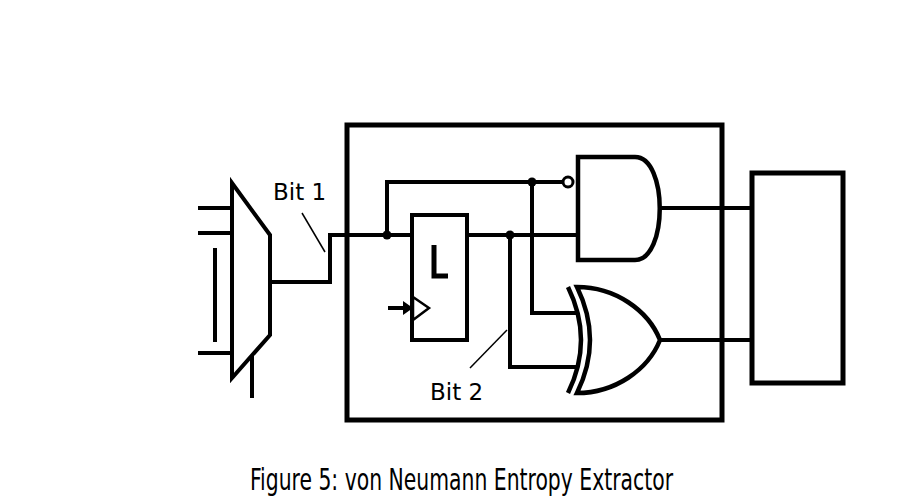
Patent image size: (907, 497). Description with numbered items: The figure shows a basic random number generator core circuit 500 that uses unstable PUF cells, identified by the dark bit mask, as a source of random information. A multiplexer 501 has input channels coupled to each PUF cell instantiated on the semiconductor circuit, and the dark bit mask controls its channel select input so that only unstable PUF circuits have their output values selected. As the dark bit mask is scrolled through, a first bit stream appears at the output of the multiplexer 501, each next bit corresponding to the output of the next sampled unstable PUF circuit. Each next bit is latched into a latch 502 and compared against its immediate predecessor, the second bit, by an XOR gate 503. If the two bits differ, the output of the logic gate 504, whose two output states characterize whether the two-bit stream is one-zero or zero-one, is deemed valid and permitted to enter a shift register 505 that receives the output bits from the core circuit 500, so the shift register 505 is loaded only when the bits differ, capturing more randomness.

The random number generator core circuit 500 is at (382, 127).
The multiplexer 501 is at (248, 223).
The latch 502 is at (437, 310).
The XOR gate 503 is at (610, 367).
The logic gate 504 is at (602, 168).
The shift register 505 is at (798, 195).